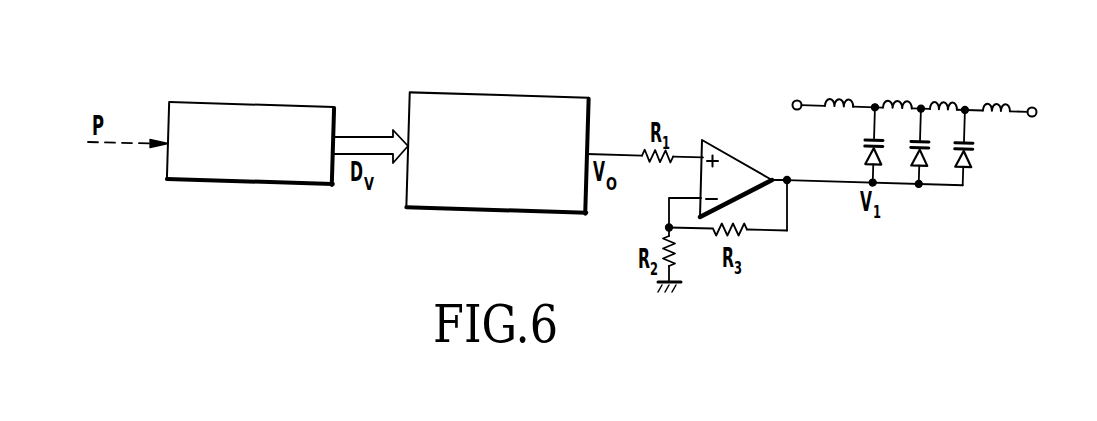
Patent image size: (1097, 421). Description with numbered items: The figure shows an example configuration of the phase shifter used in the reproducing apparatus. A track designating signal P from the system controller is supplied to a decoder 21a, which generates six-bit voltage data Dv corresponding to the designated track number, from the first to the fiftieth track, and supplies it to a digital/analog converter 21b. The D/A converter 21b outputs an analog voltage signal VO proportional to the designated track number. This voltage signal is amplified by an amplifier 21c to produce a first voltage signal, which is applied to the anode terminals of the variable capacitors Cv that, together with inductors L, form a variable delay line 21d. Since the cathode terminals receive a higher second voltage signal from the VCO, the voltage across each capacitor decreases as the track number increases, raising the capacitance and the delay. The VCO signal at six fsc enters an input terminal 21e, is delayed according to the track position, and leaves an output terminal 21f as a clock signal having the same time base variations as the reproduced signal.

The decoder 21a is at (240, 102).
The digital/analog (D/A) converter 21b is at (497, 92).
The amplifier 21c is at (727, 148).
The variable delay line 21d is at (910, 87).
The input terminal 21e is at (797, 100).
The output terminal 21f is at (1036, 108).